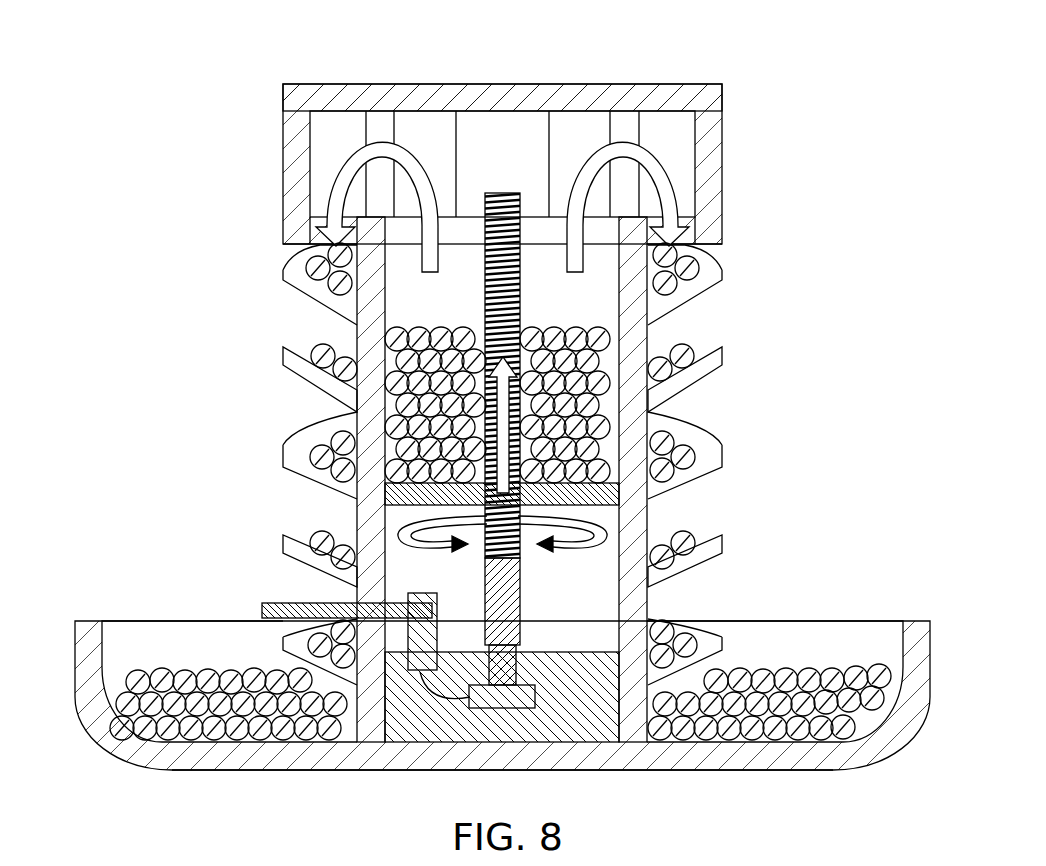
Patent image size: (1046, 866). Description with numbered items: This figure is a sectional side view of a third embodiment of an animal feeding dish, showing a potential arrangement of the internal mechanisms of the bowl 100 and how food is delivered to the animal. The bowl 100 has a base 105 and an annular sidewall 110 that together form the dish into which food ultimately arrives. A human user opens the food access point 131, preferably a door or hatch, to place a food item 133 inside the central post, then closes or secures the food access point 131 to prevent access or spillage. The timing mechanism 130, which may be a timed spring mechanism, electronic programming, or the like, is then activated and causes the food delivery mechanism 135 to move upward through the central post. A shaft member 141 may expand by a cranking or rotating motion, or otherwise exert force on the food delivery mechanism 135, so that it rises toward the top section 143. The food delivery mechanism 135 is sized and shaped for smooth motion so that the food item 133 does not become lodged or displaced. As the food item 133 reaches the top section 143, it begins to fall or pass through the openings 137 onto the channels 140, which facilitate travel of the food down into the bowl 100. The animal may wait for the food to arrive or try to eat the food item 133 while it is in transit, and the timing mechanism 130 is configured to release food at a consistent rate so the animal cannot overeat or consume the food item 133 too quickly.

The bowl 100 is at (823, 43).
The base 105 is at (726, 772).
The annular sidewall 110 is at (930, 658).
The timing mechanism 130 is at (261, 603).
The food access point 131 is at (411, 84).
The food item 133 is at (813, 675).
The food delivery mechanism 135 is at (648, 410).
The openings 137 is at (316, 250).
The channels 140 is at (722, 350).
The shaft member 141 is at (523, 611).
The top section 143 is at (502, 96).